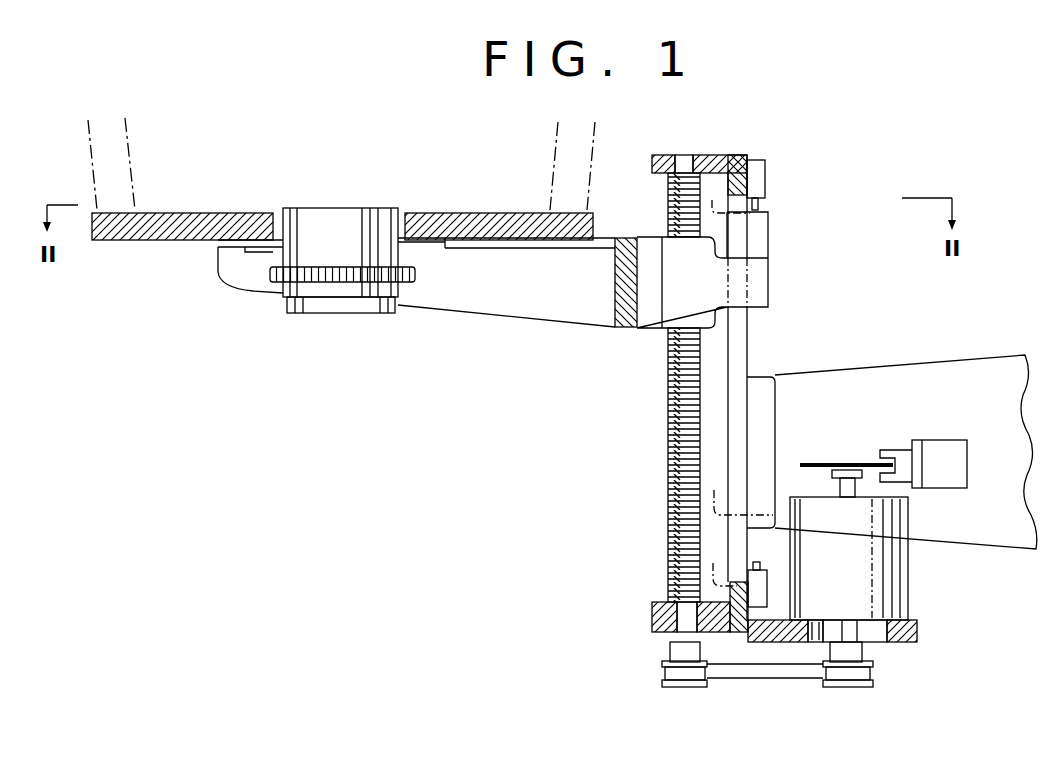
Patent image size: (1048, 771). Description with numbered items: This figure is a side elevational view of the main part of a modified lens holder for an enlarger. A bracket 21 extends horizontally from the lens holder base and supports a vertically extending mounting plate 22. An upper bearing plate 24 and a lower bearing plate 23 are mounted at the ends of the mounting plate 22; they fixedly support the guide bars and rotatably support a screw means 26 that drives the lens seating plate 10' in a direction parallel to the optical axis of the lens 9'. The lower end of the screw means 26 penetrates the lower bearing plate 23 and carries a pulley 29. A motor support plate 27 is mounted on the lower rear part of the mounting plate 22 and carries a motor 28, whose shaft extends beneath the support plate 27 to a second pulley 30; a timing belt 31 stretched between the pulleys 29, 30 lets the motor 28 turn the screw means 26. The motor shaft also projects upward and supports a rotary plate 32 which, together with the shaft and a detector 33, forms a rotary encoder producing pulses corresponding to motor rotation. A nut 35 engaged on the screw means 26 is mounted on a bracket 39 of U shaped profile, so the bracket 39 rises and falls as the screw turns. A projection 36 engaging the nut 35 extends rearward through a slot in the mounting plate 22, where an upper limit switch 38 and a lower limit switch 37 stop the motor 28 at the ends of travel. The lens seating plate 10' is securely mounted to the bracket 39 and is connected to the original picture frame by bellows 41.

The lens 9' is at (342, 236).
The lens seating plate 10' is at (342, 227).
The bellows 41 is at (590, 152).
The bracket 21 is at (930, 361).
The mounting plate 22 is at (746, 350).
The lower bearing plate 23 is at (652, 616).
The upper bearing plate 24 is at (713, 154).
The screw means 26 is at (668, 424).
The motor support plate 27 is at (912, 644).
The motor 28 is at (909, 578).
The pulley 29 is at (675, 688).
The pulley 30 is at (863, 687).
The timing belt 31 is at (775, 679).
The rotary plate 32 is at (818, 462).
The detector 33 is at (935, 438).
The nut 35 is at (658, 329).
The projection 36 is at (770, 277).
The lower limit switch 37 is at (768, 596).
The upper limit switch 38 is at (767, 180).
The U shaped bracket 39 is at (612, 298).